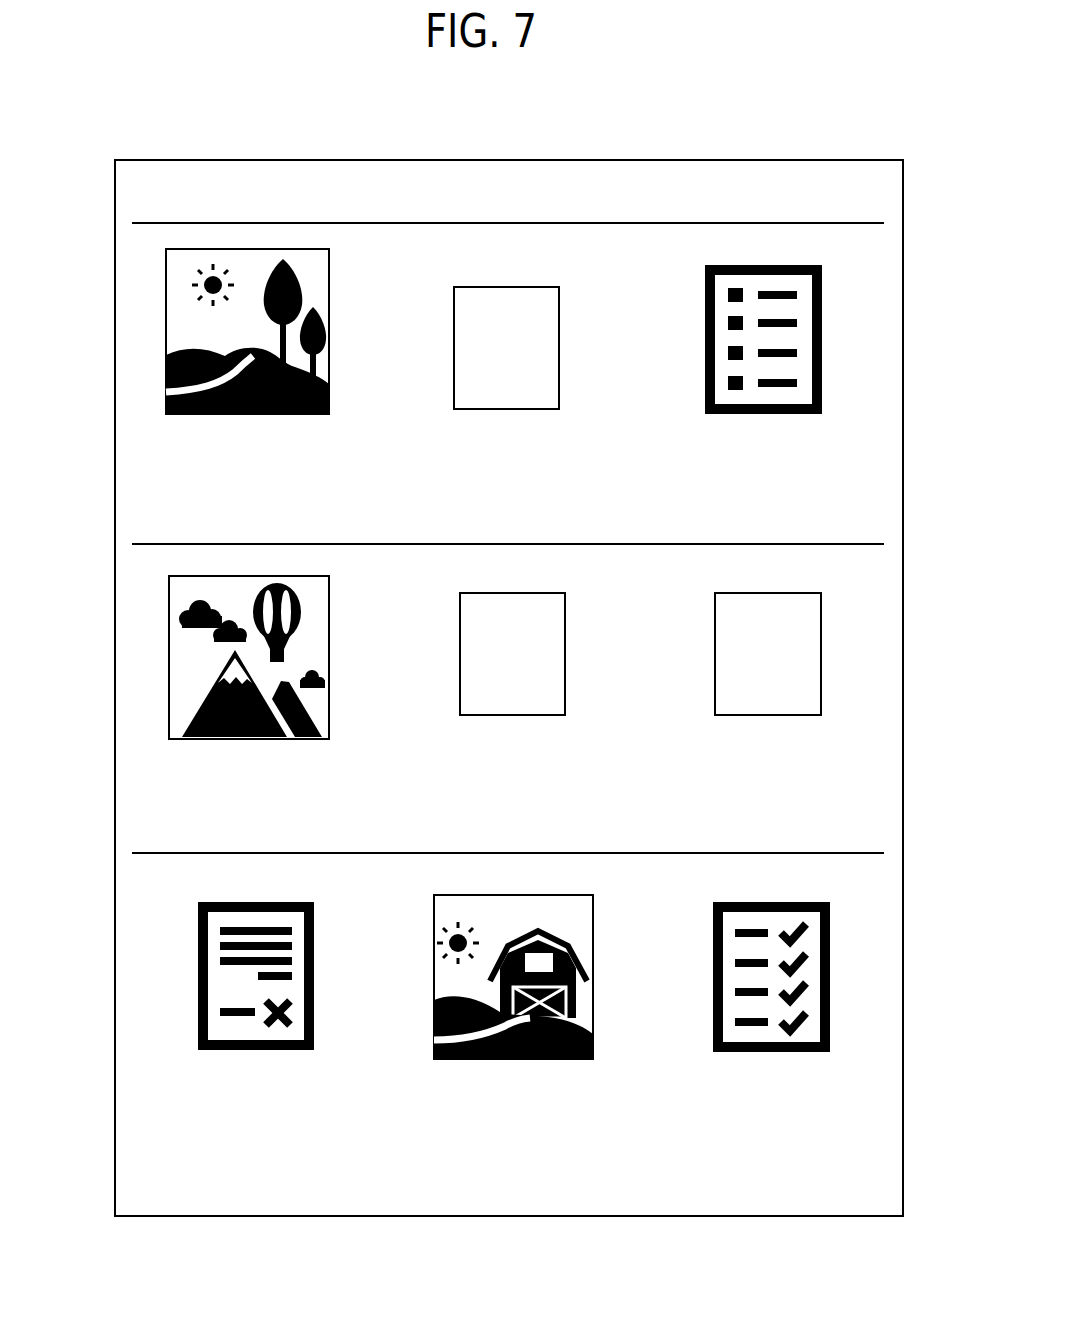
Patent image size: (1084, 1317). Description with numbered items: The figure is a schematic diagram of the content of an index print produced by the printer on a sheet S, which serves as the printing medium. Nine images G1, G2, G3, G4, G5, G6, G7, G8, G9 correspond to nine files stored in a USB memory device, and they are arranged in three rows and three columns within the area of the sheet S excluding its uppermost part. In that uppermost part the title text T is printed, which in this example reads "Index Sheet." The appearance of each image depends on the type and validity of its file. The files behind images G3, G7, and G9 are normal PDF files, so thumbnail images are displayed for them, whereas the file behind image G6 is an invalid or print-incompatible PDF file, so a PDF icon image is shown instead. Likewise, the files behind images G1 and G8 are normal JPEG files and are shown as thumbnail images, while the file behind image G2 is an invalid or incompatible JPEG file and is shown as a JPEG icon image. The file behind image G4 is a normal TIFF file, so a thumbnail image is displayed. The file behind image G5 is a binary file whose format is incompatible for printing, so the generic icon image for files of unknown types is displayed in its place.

The sheet S is at (701, 160).
The title text T is at (790, 200).
The image G1 is at (166, 350).
The image G2 is at (559, 293).
The image G3 is at (822, 341).
The image G4 is at (169, 661).
The image G5 is at (565, 628).
The image G6 is at (821, 664).
The image G7 is at (198, 998).
The image G8 is at (593, 948).
The image G9 is at (830, 967).